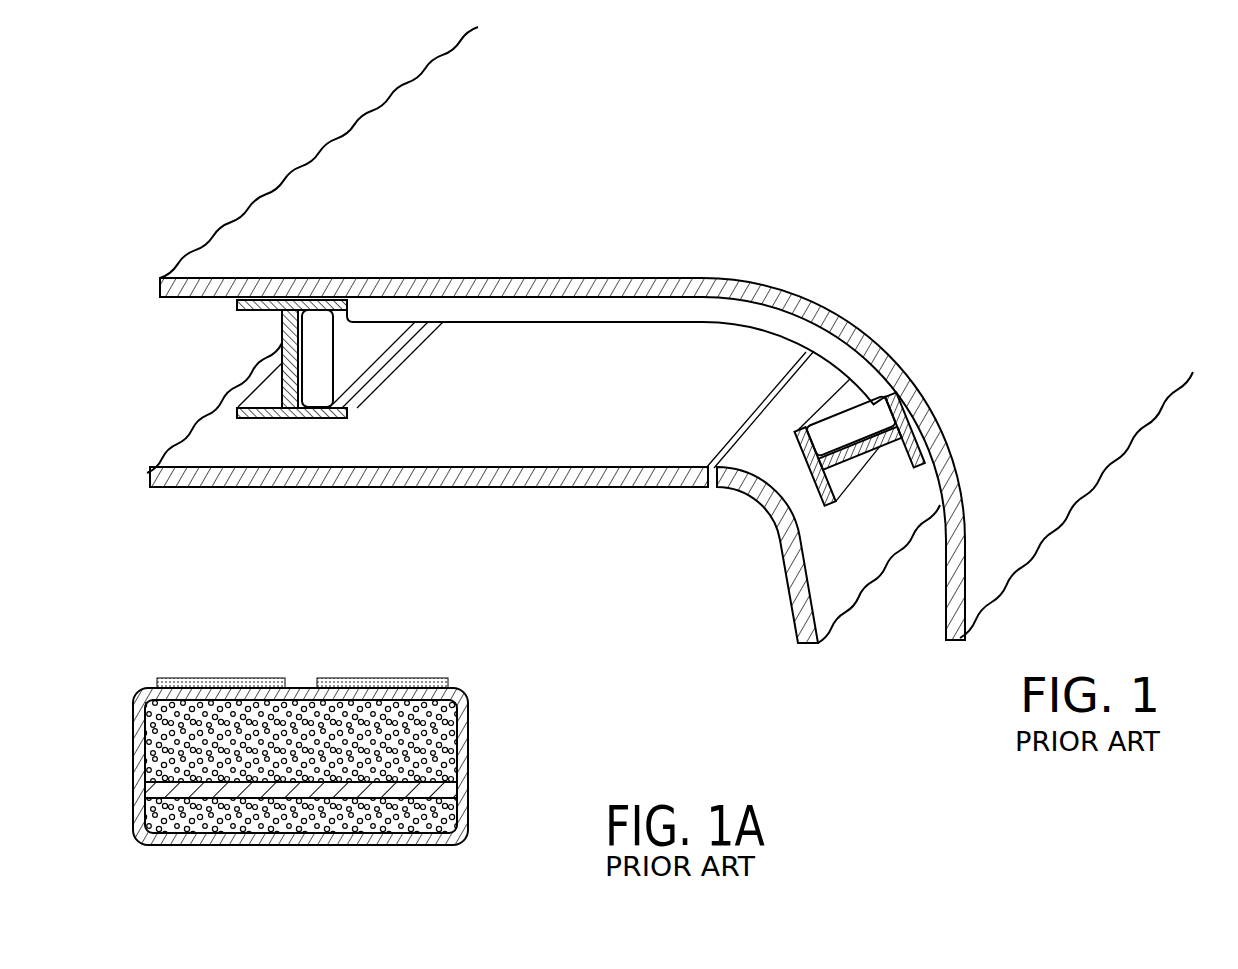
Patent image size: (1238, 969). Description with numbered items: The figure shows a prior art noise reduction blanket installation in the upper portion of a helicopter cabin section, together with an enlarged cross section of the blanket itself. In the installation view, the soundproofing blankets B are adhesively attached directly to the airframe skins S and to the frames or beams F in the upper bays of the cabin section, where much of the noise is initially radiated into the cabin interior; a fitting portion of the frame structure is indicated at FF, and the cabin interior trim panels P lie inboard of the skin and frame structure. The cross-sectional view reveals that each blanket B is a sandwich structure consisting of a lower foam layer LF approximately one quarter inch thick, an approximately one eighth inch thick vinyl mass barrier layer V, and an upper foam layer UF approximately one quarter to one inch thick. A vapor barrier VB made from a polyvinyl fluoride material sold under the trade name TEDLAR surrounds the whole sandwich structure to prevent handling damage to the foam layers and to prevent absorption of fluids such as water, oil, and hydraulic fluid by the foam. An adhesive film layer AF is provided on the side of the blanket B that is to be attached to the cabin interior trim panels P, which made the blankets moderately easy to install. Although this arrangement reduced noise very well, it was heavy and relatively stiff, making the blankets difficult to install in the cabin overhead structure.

In FIG. 1, the airframe skin S is at (607, 279).
In FIG. 1, the blanket B is at (600, 307).
In FIG. 1A, the blanket B is at (316, 741).
In FIG. 1, the frame/beam F is at (238, 413).
In FIG. 1, the fitting flange web FF is at (282, 362).
In FIG. 1, the cabin interior trim panel P is at (824, 590).
In FIG. 1A, the adhesive film layer AF is at (213, 680).
In FIG. 1A, the upper foam layer UF is at (293, 720).
In FIG. 1A, the lower foam layer LF is at (430, 818).
In FIG. 1A, the vinyl mass barrier layer V is at (145, 796).
In FIG. 1A, the vapor barrier VB is at (450, 688).